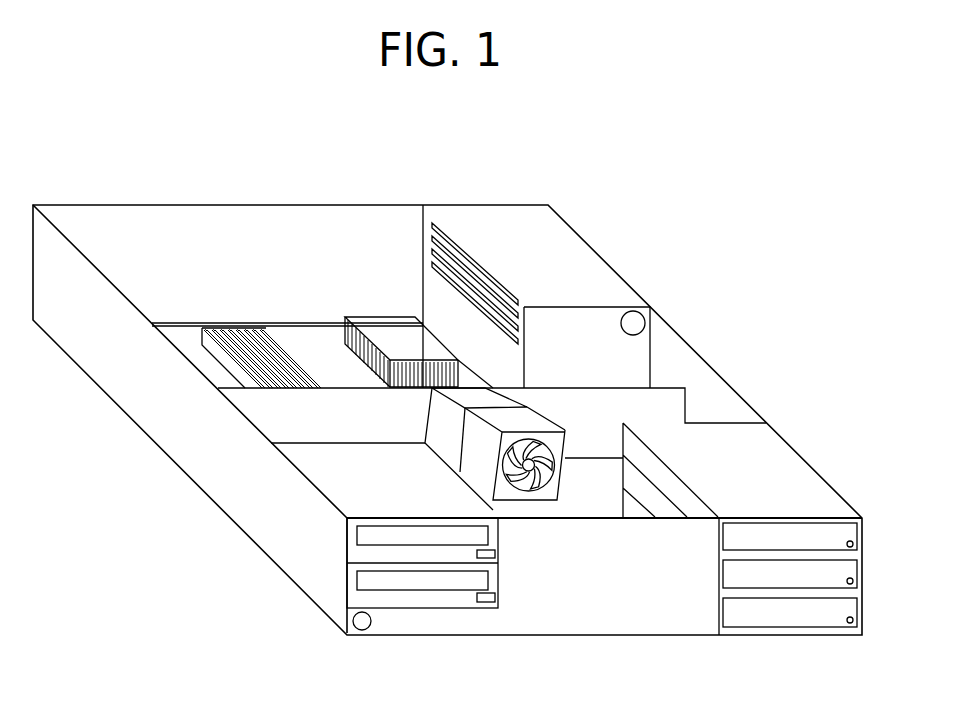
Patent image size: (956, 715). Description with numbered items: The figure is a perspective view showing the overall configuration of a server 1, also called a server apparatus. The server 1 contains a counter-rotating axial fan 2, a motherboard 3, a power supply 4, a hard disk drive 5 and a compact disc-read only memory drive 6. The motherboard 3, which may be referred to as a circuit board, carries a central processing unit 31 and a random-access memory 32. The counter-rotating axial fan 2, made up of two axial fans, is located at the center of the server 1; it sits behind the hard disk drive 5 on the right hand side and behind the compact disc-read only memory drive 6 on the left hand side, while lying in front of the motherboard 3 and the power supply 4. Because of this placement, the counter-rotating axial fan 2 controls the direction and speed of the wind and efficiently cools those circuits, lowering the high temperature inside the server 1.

The server 1 is at (746, 268).
The counter-rotating axial fan 2 is at (578, 440).
The motherboard 3 is at (295, 336).
The central processing unit 31 is at (390, 340).
The random-access memory 32 is at (220, 357).
The power supply 4 is at (597, 284).
The hard disk drive 5 is at (757, 472).
The compact disc-read only memory drive 6 is at (357, 497).